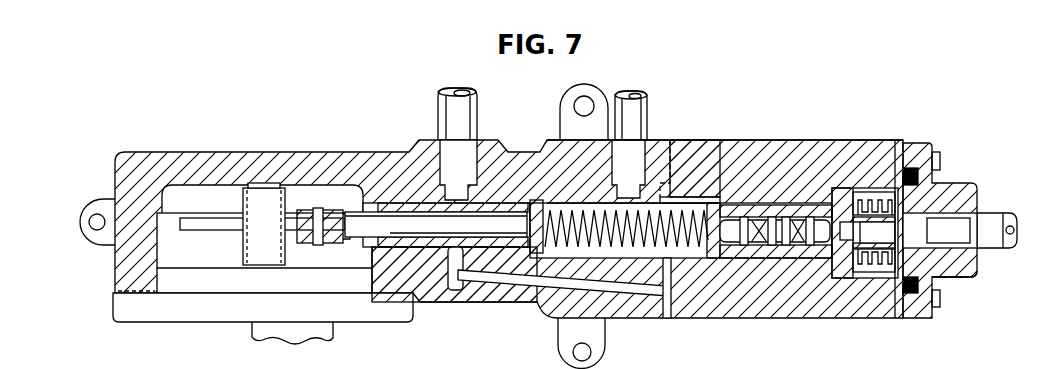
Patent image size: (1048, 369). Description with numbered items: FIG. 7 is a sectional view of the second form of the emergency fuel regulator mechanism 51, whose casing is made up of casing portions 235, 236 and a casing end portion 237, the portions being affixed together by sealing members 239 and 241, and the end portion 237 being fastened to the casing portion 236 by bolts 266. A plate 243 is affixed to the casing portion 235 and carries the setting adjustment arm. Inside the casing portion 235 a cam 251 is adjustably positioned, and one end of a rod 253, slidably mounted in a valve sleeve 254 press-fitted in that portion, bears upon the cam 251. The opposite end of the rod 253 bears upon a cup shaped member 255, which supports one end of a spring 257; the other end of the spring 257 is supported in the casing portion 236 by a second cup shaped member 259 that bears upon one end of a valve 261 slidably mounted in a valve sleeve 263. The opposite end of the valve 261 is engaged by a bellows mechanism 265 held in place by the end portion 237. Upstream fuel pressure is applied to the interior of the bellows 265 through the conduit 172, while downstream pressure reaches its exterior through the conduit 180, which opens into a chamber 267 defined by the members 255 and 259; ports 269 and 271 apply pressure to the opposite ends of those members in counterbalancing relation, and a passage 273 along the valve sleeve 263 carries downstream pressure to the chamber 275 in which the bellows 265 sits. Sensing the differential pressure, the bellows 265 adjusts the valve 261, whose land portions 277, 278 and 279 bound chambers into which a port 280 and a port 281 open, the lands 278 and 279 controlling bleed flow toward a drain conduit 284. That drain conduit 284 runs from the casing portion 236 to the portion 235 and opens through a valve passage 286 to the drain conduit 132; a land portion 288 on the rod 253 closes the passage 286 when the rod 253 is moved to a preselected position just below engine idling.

The emergency fuel regulator mechanism 51 is at (724, 135).
The drain conduit 132 is at (477, 104).
The conduit 172 is at (980, 213).
The conduit 180 is at (647, 100).
The casing portion 235 is at (250, 152).
The casing portion 236 is at (889, 142).
The casing end portion 237 is at (924, 148).
The sealing member 239 is at (667, 318).
The sealing member 241 is at (938, 280).
The plate 243 is at (182, 322).
The cam 251 is at (203, 230).
The rod 253 is at (352, 212).
The valve sleeve 254 is at (378, 249).
The cup shaped member 255 is at (538, 200).
The spring 257 is at (604, 248).
The second cup shaped member 259 is at (688, 197).
The valve 261 is at (782, 262).
The valve sleeve 263 is at (804, 206).
The bellows mechanism 265 is at (862, 274).
The bolts 266 is at (938, 307).
The chamber 267 is at (586, 200).
The port 269 is at (530, 203).
The port 271 is at (726, 215).
The passage 273 is at (760, 205).
The chamber 275 is at (848, 192).
The land portion 277 is at (784, 220).
The land portion 278 is at (746, 245).
The land portion 279 is at (818, 248).
The port 280 is at (775, 245).
The port 281 is at (808, 245).
The drain conduit 284 is at (638, 293).
The valve passage 286 is at (458, 216).
The land portion 288 is at (465, 262).